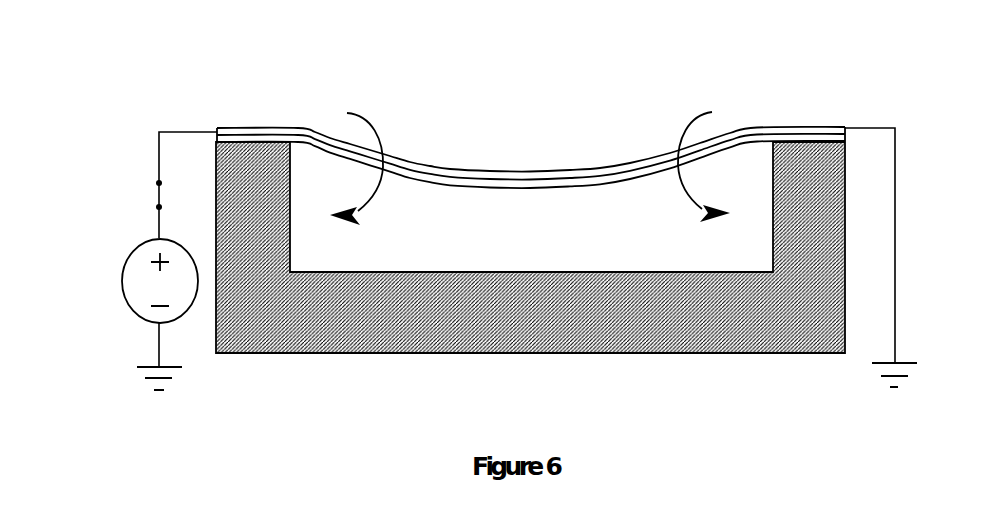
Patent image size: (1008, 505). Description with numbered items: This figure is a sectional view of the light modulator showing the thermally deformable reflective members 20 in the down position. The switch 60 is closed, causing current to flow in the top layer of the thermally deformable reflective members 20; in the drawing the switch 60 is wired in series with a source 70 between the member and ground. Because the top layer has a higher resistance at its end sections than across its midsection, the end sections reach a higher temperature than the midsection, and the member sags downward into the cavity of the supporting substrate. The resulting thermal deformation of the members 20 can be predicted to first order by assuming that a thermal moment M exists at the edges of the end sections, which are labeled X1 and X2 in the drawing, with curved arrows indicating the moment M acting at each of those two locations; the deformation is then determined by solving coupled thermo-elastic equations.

The first plurality of thermally deformable reflective members 20 is at (602, 169).
The switch 60 is at (159, 201).
The voltage source 70 is at (122, 277).
The thermal moment M is at (530, 153).
The edge of end section X1 is at (392, 185).
The edge of end section X2 is at (672, 184).